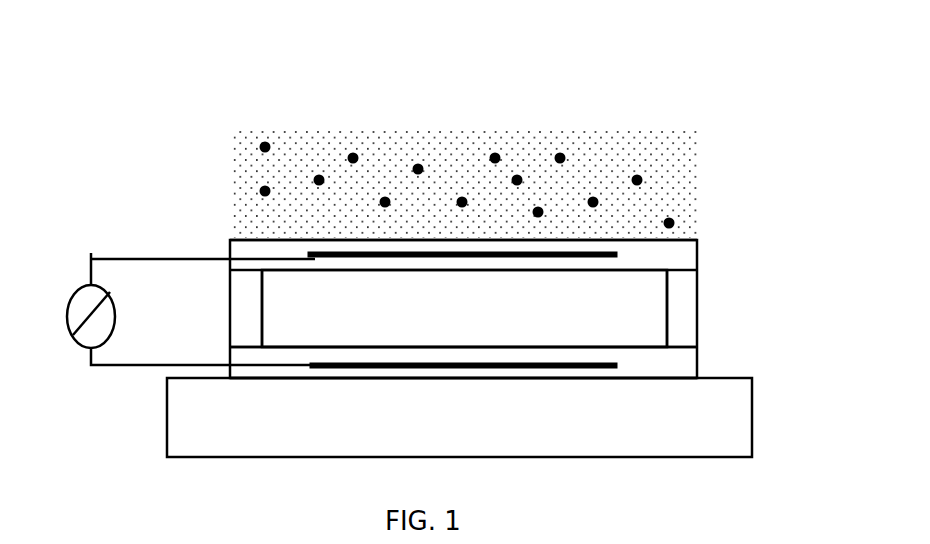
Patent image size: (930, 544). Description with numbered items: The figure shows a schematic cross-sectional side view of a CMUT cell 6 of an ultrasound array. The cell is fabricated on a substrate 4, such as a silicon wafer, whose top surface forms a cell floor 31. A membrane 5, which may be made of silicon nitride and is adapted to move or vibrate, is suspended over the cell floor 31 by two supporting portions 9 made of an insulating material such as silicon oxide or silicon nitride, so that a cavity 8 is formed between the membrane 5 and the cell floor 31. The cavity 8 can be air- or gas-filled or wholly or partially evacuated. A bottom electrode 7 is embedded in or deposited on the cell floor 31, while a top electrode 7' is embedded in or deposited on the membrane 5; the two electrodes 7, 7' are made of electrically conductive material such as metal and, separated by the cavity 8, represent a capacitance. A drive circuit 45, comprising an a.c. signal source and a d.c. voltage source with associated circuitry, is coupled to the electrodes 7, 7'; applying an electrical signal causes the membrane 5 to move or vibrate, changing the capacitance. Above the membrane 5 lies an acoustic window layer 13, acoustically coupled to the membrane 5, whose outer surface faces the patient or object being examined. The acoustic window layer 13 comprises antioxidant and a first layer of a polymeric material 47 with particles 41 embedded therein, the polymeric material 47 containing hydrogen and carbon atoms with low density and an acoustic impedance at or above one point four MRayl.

The substrate 4 is at (192, 425).
The membrane 5 is at (248, 250).
The CMUT cell 6 is at (245, 95).
The bottom electrode 7 is at (572, 407).
The top electrode 7' is at (576, 290).
The cavity 8 is at (464, 308).
The supporting portions 9 is at (245, 295).
The acoustic window layer 13 is at (638, 133).
The cell floor 31 is at (557, 349).
The particles 41 is at (677, 208).
The drive circuit 45 is at (176, 309).
The polymeric material 47 is at (448, 155).